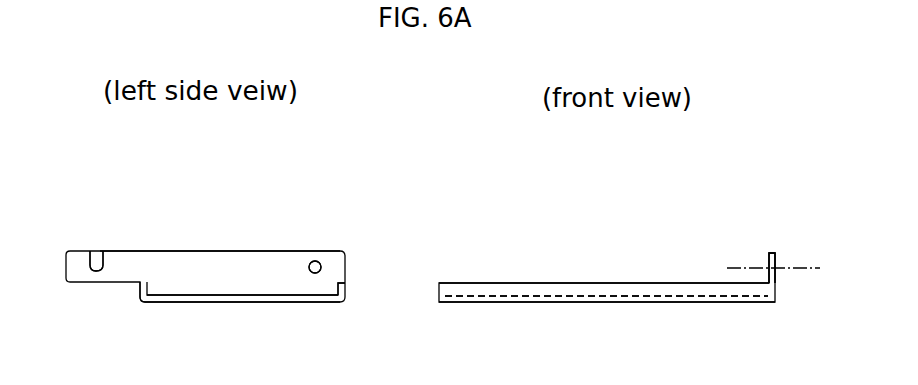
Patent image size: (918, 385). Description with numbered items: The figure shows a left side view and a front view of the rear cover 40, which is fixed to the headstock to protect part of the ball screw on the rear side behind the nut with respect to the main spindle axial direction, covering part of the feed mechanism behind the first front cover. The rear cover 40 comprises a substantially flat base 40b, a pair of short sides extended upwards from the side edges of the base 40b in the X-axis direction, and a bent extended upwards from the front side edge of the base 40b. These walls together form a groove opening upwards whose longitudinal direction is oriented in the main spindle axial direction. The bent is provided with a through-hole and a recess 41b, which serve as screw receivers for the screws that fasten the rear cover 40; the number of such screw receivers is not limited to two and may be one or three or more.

The rear cover 40 is at (100, 147).
The base 40b is at (276, 304).
The recess 41b is at (92, 254).